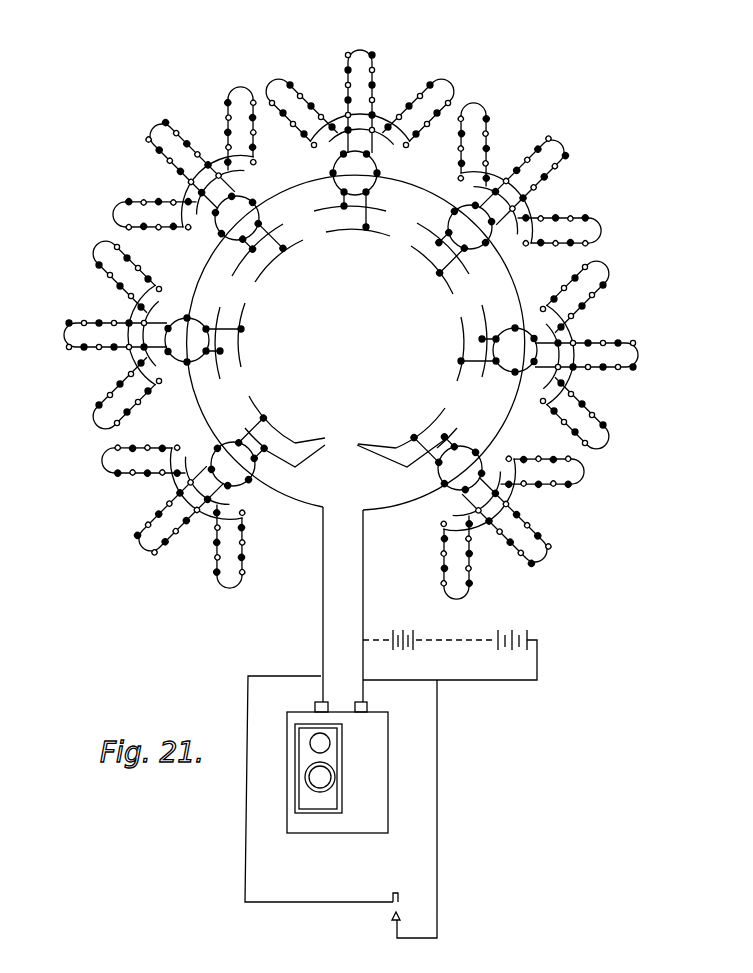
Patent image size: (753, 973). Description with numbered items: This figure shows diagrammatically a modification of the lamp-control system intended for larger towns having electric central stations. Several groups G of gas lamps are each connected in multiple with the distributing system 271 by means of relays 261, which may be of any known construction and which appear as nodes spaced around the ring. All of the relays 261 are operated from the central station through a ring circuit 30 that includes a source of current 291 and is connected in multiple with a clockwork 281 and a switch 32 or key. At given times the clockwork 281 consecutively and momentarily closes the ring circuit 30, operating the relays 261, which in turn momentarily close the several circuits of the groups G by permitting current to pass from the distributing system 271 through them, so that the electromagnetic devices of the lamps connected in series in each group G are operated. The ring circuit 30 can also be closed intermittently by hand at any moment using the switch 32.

The group of lamps G is at (350, 318).
The relay 261 is at (351, 326).
The distributing system 271 is at (354, 449).
The clockwork 281 is at (318, 777).
The source of current 291 is at (418, 642).
The ring circuit 30 is at (363, 508).
The switch 32 is at (398, 902).